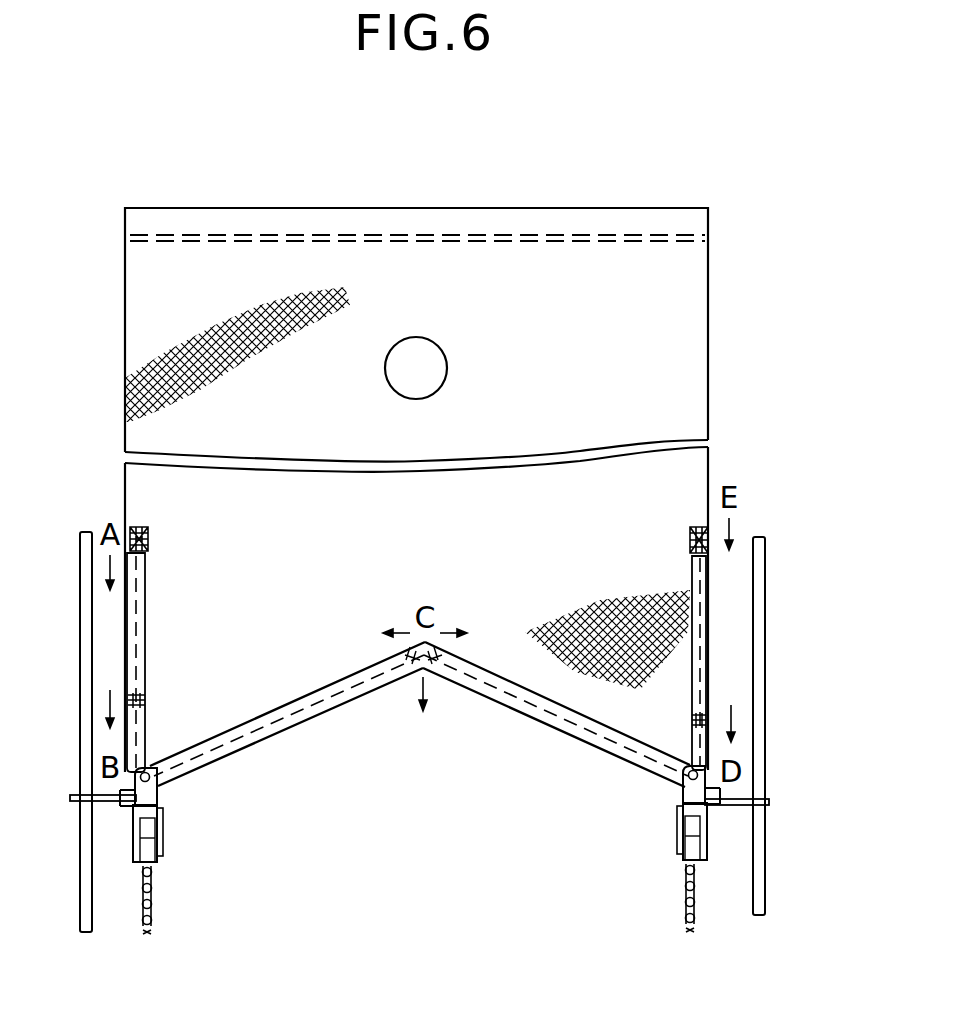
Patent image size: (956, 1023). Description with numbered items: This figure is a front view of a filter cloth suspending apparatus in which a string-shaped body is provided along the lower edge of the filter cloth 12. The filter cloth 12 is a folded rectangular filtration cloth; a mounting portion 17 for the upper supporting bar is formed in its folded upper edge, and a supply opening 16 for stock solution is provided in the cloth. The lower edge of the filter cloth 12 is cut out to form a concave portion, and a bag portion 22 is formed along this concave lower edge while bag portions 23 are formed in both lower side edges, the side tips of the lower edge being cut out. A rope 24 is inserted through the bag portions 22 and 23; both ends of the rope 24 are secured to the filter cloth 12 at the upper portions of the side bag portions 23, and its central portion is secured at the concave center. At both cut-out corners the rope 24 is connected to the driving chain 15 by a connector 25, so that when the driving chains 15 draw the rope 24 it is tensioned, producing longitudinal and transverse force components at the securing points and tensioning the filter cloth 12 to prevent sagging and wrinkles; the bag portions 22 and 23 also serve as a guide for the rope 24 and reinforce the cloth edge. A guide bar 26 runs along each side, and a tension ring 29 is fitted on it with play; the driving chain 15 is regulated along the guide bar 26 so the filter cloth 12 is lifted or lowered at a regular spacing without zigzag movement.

The filter cloth 12 is at (132, 373).
The driving chain 15 is at (152, 912).
The supply opening for stock solution 16 is at (403, 348).
The mounting portion 17 is at (421, 207).
The bag portion 22 is at (325, 725).
The bag portions 23 is at (130, 642).
The rope 24 is at (250, 738).
The connector 25 is at (157, 845).
The guide bar 26 is at (80, 882).
The tension ring 29 is at (72, 803).